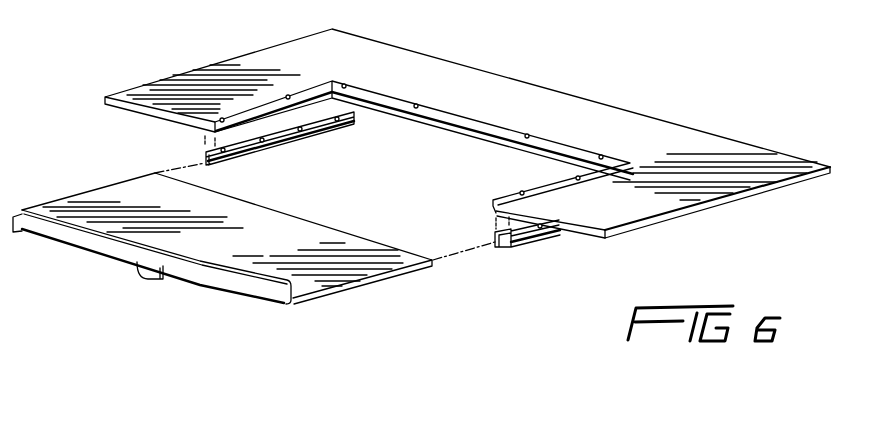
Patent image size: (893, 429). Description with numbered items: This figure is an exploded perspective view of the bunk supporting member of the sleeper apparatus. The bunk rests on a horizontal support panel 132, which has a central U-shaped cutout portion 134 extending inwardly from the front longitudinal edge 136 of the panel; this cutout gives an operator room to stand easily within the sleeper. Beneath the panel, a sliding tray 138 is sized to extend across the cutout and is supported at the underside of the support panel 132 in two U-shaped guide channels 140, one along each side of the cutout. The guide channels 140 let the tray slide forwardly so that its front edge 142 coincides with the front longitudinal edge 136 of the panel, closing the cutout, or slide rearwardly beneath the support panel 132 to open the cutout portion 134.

The horizontal support panel 132 is at (451, 133).
The central U-shaped cutout portion 134 is at (439, 140).
The front longitudinal edge 136 is at (138, 109).
The sliding tray 138 is at (237, 238).
The U-shaped guide channels 140 is at (294, 142).
The front edge 142 is at (126, 248).